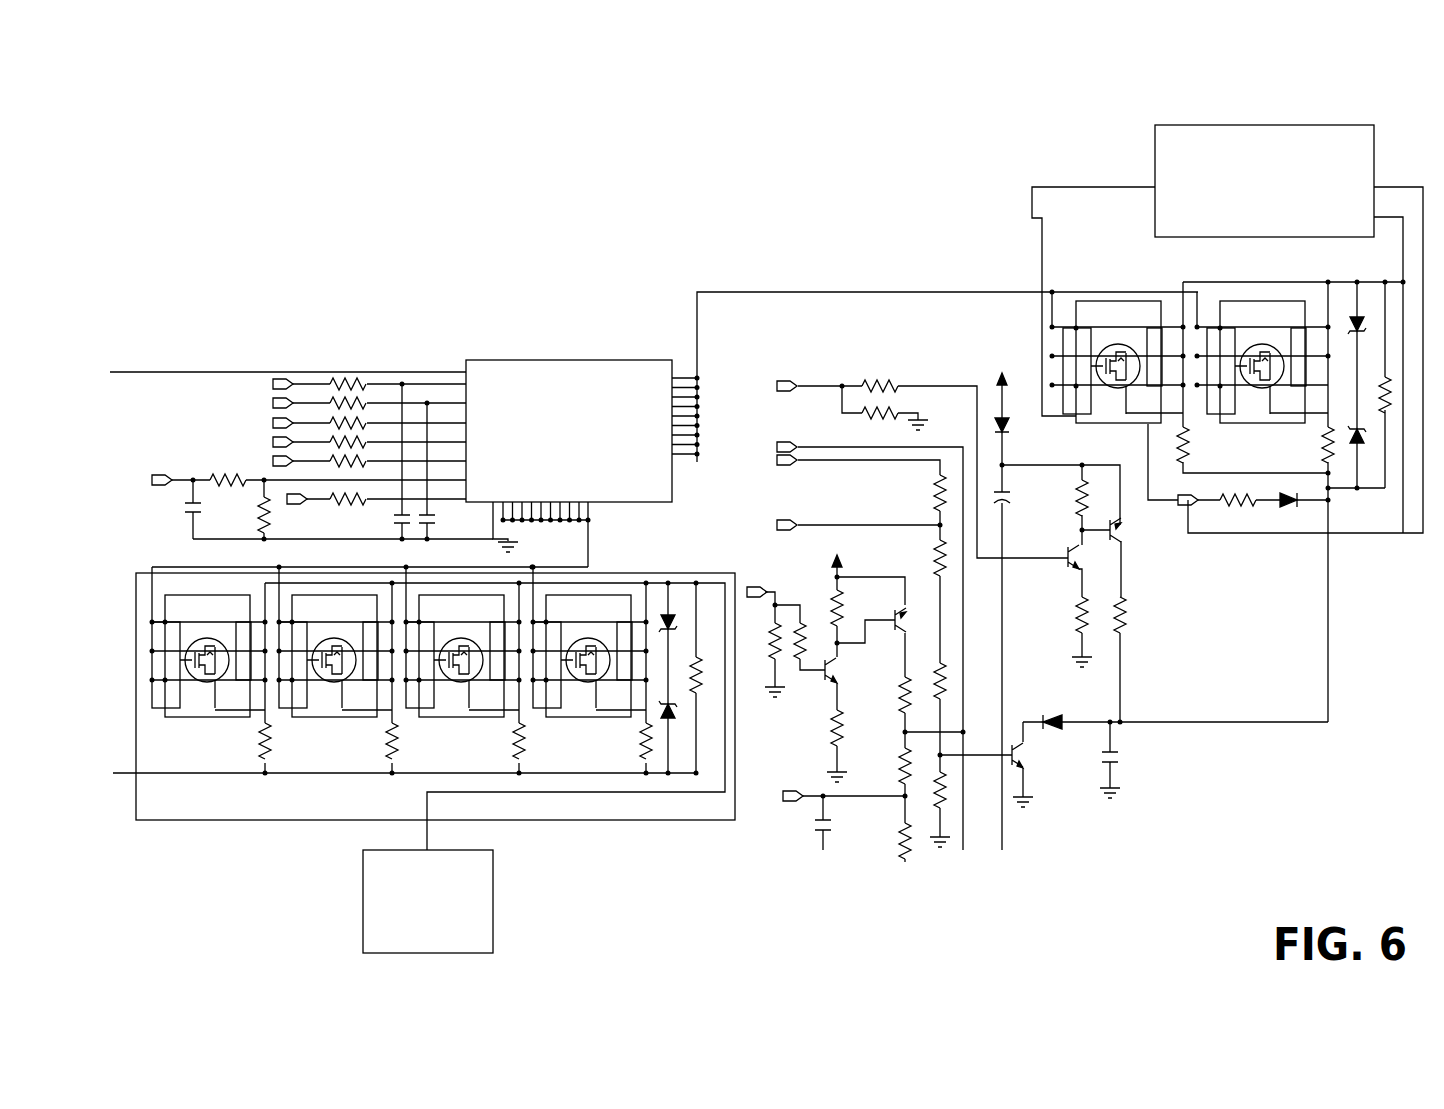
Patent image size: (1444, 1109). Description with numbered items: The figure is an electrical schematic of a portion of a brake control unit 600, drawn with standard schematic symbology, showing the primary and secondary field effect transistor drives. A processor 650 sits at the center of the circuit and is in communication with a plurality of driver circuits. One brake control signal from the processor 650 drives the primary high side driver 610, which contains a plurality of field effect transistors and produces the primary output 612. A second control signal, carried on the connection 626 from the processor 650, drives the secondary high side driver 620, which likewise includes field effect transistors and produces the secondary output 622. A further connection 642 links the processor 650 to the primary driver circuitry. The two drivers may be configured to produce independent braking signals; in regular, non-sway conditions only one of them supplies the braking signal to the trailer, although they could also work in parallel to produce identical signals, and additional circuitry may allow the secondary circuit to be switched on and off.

The brake control unit 600 is at (258, 72).
The primary high side driver 610 is at (241, 820).
The primary output 612 is at (493, 902).
The secondary high side driver 620 is at (1100, 208).
The secondary output 622 is at (1267, 125).
The control signal line 626 is at (810, 292).
The connection line 642 is at (592, 546).
The processor 650 is at (568, 360).